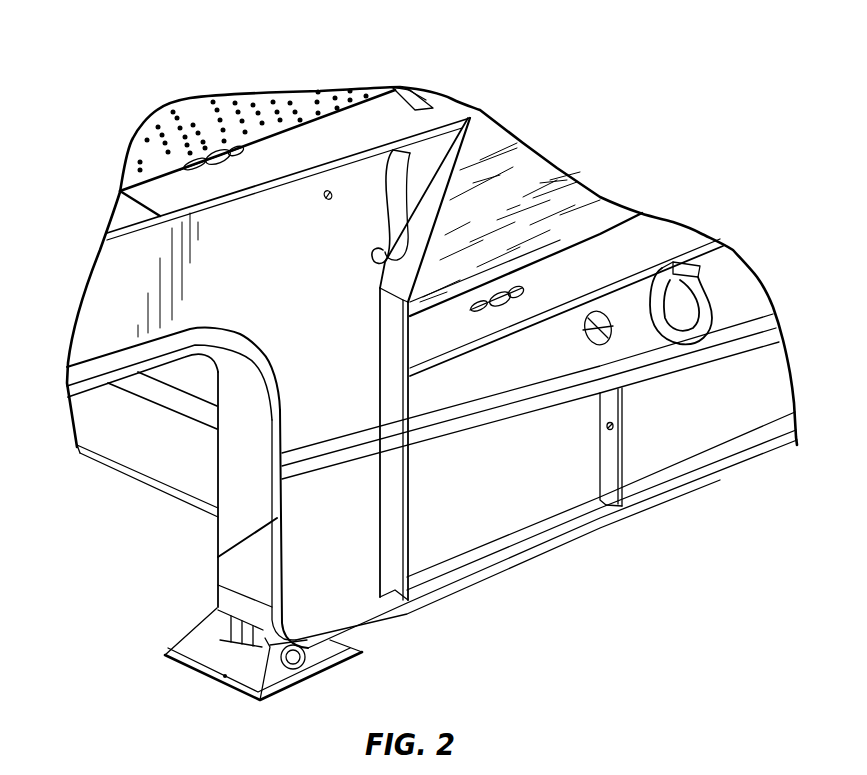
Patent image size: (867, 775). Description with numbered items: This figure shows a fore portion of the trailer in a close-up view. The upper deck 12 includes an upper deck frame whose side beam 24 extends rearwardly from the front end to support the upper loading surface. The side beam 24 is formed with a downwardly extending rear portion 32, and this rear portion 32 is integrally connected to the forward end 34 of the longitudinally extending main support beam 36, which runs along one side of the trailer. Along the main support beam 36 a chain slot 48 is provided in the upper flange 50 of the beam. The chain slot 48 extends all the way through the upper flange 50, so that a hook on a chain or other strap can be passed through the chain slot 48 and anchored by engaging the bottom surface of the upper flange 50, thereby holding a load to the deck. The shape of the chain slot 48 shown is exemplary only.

The upper deck 12 is at (182, 99).
The side beam 24 is at (122, 282).
The rear portion 32 is at (328, 567).
The forward end 34 is at (407, 518).
The main support beam 36 is at (737, 290).
The chain slot 48 is at (517, 293).
The upper flange 50 is at (722, 253).